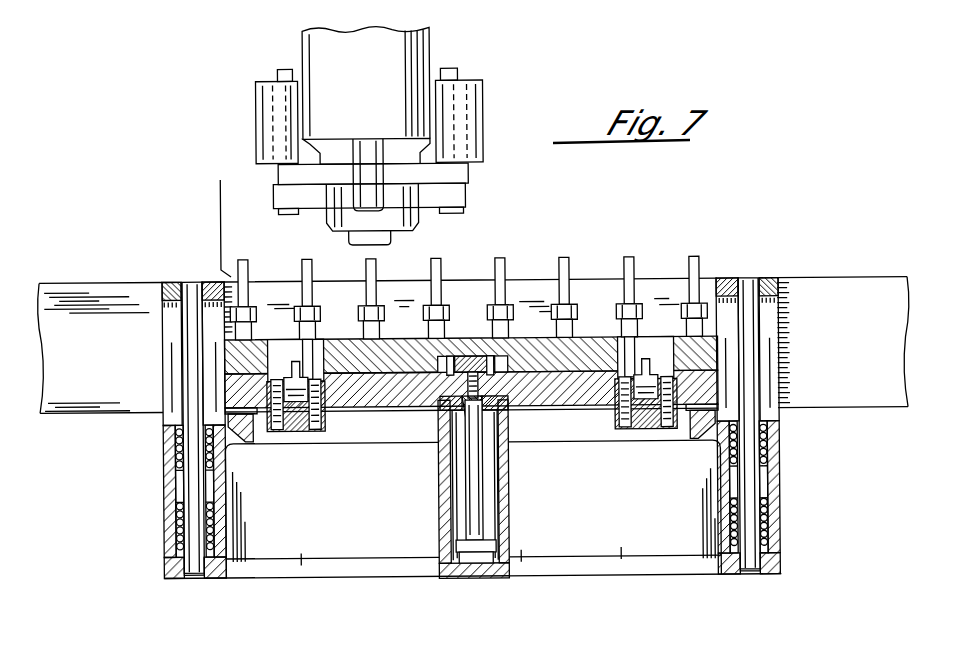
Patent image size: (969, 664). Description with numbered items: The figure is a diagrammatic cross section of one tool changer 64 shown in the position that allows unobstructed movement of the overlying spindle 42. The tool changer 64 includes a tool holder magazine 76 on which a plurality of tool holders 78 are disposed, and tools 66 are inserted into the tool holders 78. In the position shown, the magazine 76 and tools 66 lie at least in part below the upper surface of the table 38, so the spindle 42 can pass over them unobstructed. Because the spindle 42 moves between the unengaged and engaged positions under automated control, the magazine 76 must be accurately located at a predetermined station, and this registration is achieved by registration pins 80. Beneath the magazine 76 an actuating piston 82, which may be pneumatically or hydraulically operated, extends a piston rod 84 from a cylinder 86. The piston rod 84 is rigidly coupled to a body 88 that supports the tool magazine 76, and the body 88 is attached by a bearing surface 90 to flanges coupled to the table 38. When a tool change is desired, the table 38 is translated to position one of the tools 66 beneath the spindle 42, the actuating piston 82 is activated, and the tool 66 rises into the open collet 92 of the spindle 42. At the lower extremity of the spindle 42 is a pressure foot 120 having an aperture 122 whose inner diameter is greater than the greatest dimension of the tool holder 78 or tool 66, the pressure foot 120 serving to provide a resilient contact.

The table 38 is at (97, 297).
The spindle 42 is at (421, 58).
The tool changer 64 is at (290, 588).
The tools 66 is at (698, 268).
The tool holder magazine 76 is at (703, 353).
The tool holders 78 is at (320, 332).
The registration pins 80 is at (305, 382).
The actuating piston 82 is at (479, 498).
The piston rod 84 is at (486, 522).
The cylinder 86 is at (441, 531).
The body 88 is at (558, 396).
The bearing surface 90 is at (780, 527).
The collet 92 is at (373, 162).
The pressure foot 120 is at (417, 212).
The aperture 122 is at (367, 246).